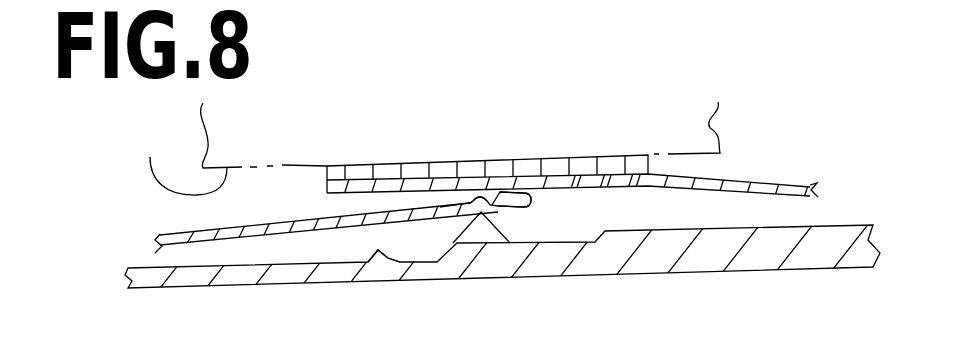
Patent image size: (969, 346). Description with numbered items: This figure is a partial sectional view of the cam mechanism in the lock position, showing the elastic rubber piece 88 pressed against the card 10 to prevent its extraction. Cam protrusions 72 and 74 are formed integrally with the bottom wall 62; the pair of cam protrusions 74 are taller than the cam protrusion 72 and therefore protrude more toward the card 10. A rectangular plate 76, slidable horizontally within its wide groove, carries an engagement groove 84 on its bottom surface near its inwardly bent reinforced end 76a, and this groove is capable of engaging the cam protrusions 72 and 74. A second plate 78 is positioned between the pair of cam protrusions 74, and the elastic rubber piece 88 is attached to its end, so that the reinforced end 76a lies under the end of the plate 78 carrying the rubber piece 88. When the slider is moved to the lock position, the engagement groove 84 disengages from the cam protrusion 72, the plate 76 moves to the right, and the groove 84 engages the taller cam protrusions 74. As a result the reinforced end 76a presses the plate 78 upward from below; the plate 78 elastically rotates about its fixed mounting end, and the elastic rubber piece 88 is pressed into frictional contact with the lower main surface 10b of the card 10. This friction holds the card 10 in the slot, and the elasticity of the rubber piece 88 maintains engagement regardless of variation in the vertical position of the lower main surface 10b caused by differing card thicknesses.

The card 10 is at (510, 123).
The lower main surface 10b is at (170, 158).
The bottom wall 62 is at (750, 258).
The cam protrusion 72 is at (377, 266).
The cam protrusions 74 is at (483, 227).
The plate 76 is at (280, 227).
The reinforced end 76a is at (520, 190).
The plate 78 is at (755, 185).
The engagement groove 84 is at (448, 210).
The elastic rubber piece 88 is at (387, 175).